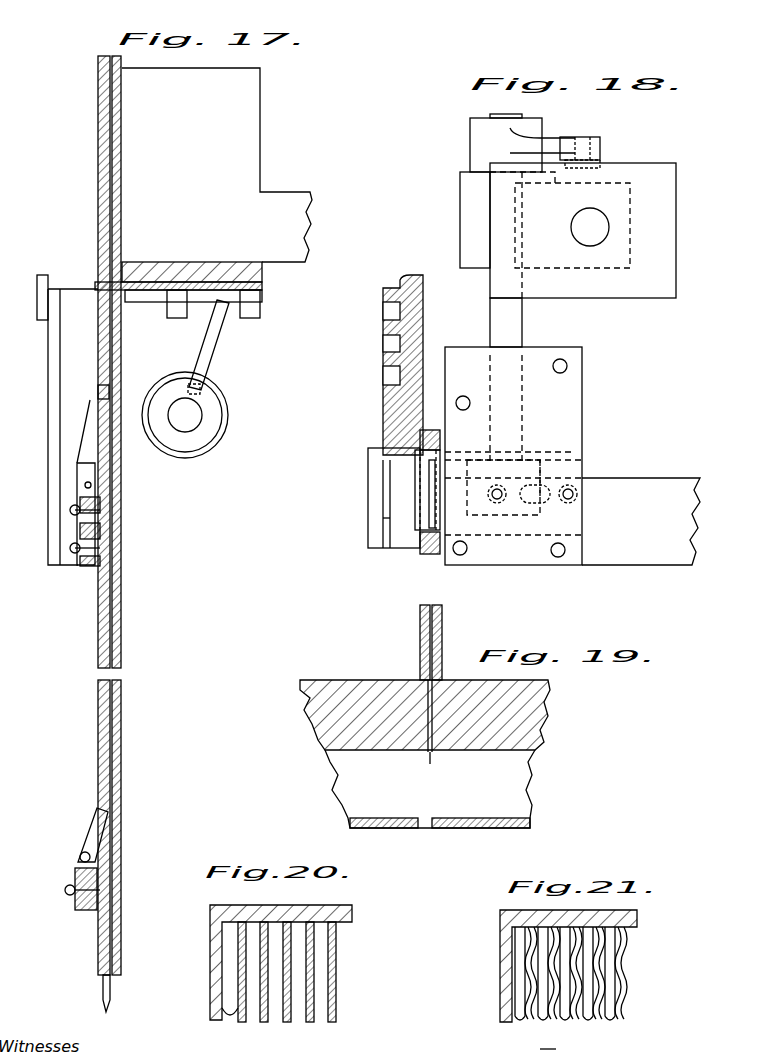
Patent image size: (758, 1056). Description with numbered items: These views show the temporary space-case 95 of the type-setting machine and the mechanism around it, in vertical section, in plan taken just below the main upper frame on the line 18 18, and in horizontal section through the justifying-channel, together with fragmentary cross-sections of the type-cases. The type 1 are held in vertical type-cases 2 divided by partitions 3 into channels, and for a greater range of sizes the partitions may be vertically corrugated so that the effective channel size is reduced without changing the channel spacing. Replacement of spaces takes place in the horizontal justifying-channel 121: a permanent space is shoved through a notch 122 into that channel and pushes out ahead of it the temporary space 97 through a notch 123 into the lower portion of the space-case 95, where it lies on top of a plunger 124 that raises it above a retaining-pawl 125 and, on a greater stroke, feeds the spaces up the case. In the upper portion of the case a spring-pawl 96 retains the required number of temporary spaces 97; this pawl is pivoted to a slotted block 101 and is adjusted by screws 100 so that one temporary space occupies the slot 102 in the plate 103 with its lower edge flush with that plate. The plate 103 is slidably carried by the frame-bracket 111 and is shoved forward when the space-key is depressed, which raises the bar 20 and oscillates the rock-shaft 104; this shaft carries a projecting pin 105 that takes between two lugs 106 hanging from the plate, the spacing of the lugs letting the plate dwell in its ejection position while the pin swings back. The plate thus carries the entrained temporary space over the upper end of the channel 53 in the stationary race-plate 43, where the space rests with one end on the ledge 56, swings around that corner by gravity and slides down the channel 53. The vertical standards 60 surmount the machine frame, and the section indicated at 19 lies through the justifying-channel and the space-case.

In FIG. 20, the type 1 is at (232, 1018).
In FIG. 21, the type 1 is at (548, 1040).
In FIG. 20, the type-cases 2 is at (266, 962).
In FIG. 21, the type-cases 2 is at (553, 966).
In FIG. 20, the partitions 3 is at (296, 972).
In FIG. 21, the partitions 3 is at (624, 988).
In FIG. 17, the rod 18 is at (97, 258).
In FIG. 17, the rear arm of bell-crank lever 19 is at (78, 913).
In FIG. 18, the bar 20 is at (600, 162).
In FIG. 18, the stationary race-plate 43 is at (386, 398).
In FIG. 18, the channel 53 is at (384, 490).
In FIG. 18, the ledge 56 is at (386, 518).
In FIG. 18, the vertical standards 60 is at (583, 230).
In FIG. 17, the temporary space-case 95 is at (111, 720).
In FIG. 18, the temporary space-case 95 is at (429, 555).
In FIG. 19, the temporary space-case 95 is at (442, 636).
In FIG. 17, the spring-pawl 96 is at (97, 398).
In FIG. 17, the temporary space 97 is at (121, 180).
In FIG. 17, the screws 100 is at (74, 507).
In FIG. 17, the slotted block 101 is at (102, 503).
In FIG. 18, the slot 102 is at (431, 478).
In FIG. 17, the plate 103 is at (207, 283).
In FIG. 17, the rock-shaft 104 is at (185, 415).
In FIG. 18, the rock-shaft 104 is at (507, 322).
In FIG. 17, the projecting pin 105 is at (208, 347).
In FIG. 18, the projecting pin 105 is at (548, 504).
In FIG. 17, the lugs 106 is at (179, 318).
In FIG. 18, the lugs 106 is at (497, 503).
In FIG. 17, the frame-bracket 111 is at (154, 337).
In FIG. 18, the frame-bracket 111 is at (513, 456).
In FIG. 19, the justifying-channel 121 is at (425, 754).
In FIG. 19, the notch 122 is at (423, 830).
In FIG. 19, the notch 123 is at (443, 733).
In FIG. 17, the plunger 124 is at (117, 922).
In FIG. 19, the plunger 124 is at (420, 648).
In FIG. 17, the retaining-pawl 125 is at (97, 832).